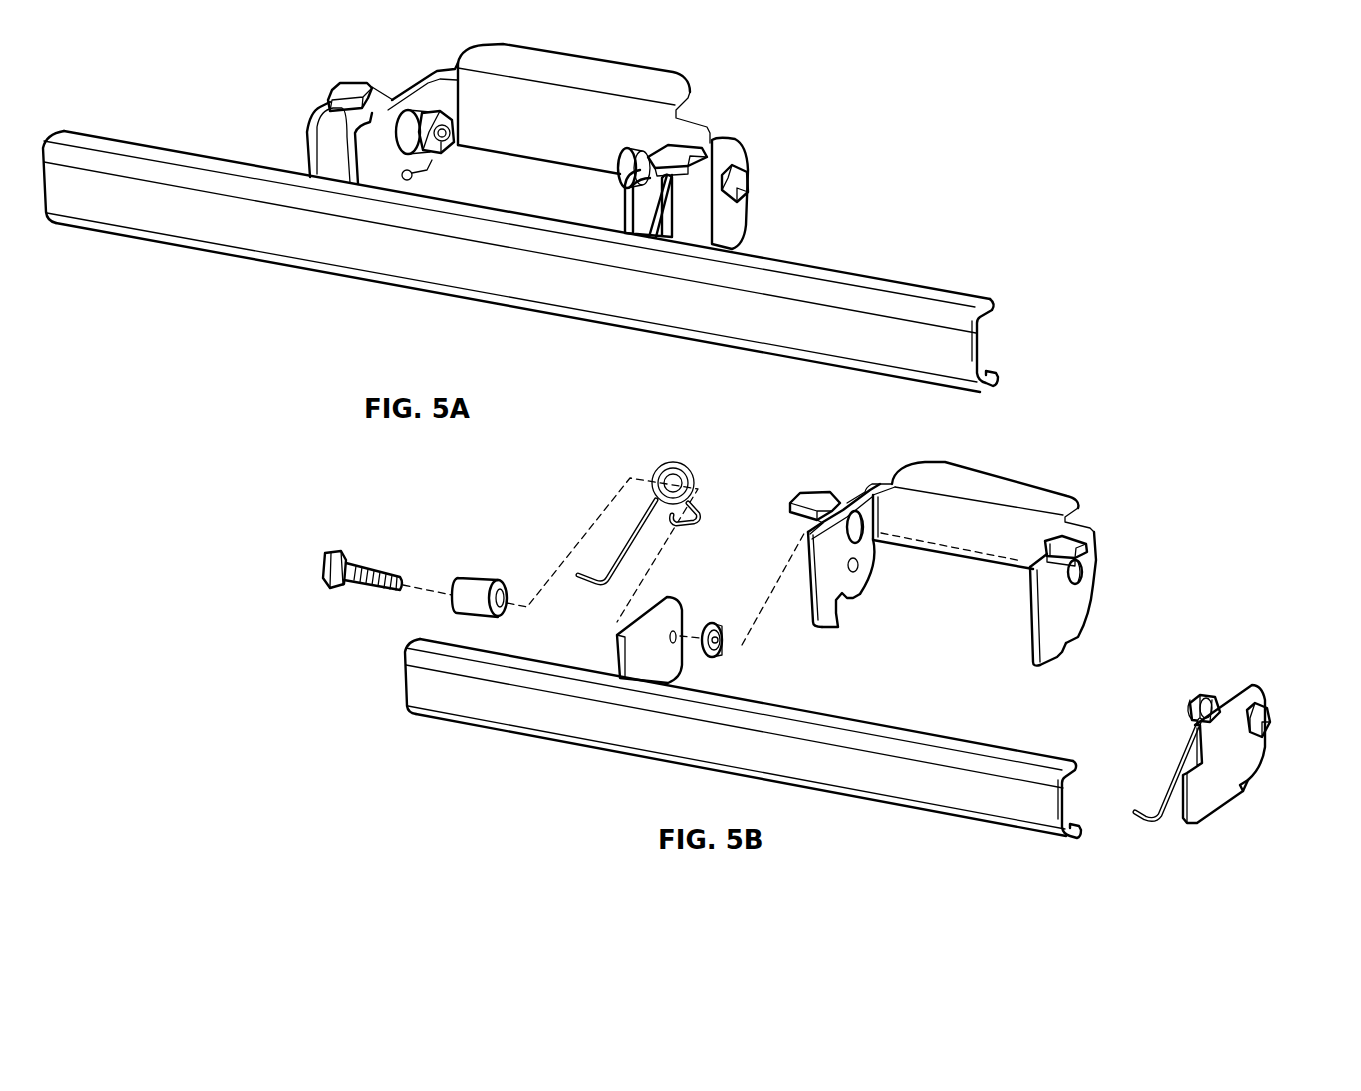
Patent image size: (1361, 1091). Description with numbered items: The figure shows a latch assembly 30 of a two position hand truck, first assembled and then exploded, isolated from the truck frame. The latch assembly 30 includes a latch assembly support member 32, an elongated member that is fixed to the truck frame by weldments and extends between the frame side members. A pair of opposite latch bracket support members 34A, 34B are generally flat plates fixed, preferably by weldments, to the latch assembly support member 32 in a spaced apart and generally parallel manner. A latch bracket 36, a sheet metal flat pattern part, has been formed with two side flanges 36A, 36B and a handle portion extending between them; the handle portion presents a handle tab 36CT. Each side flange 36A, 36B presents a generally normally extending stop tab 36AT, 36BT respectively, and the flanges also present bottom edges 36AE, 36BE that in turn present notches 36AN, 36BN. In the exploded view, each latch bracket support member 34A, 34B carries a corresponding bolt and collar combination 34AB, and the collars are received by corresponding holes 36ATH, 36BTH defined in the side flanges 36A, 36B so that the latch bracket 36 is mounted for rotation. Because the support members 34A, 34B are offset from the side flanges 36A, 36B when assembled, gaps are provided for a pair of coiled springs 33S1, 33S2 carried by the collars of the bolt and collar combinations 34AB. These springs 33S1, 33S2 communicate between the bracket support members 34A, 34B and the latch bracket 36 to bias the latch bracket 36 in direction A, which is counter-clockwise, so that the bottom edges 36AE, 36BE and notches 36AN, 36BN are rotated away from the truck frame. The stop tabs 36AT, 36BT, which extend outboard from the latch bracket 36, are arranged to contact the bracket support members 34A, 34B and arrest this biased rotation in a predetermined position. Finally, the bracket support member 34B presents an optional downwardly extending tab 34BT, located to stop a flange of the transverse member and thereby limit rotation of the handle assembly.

In FIG. 5A, the latch assembly 30 is at (788, 123).
In FIG. 5B, the latch assembly 30 is at (1135, 451).
In FIG. 5A, the latch assembly support member 32 is at (596, 316).
In FIG. 5A, the latch bracket 36 is at (595, 45).
In FIG. 5B, the latch bracket 36 is at (1003, 456).
In FIG. 5A, the direction A is at (707, 43).
In FIG. 5B, the bolt and collar combination 34AB is at (483, 566).
In FIG. 5B, the coiled spring 33S2 is at (653, 451).
In FIG. 5B, the coiled spring 33S1 is at (1181, 743).
In FIG. 5B, the latch bracket support member 34A is at (614, 653).
In FIG. 5B, the latch bracket support member 34B is at (1254, 756).
In FIG. 5B, the downwardly extending tab 34BT is at (1250, 791).
In FIG. 5B, the handle tab 36CT is at (946, 428).
In FIG. 5B, the side flange 36A is at (855, 597).
In FIG. 5B, the stop tab 36AT is at (826, 492).
In FIG. 5B, the hole 36ATH is at (864, 551).
In FIG. 5B, the bottom edge 36AE is at (845, 608).
In FIG. 5B, the notch 36AN is at (825, 614).
In FIG. 5B, the side flange 36B is at (1068, 616).
In FIG. 5B, the stop tab 36BT is at (1064, 546).
In FIG. 5B, the hole 36BTH is at (1070, 591).
In FIG. 5B, the bottom edge 36BE is at (1071, 636).
In FIG. 5B, the notch 36BN is at (1056, 648).